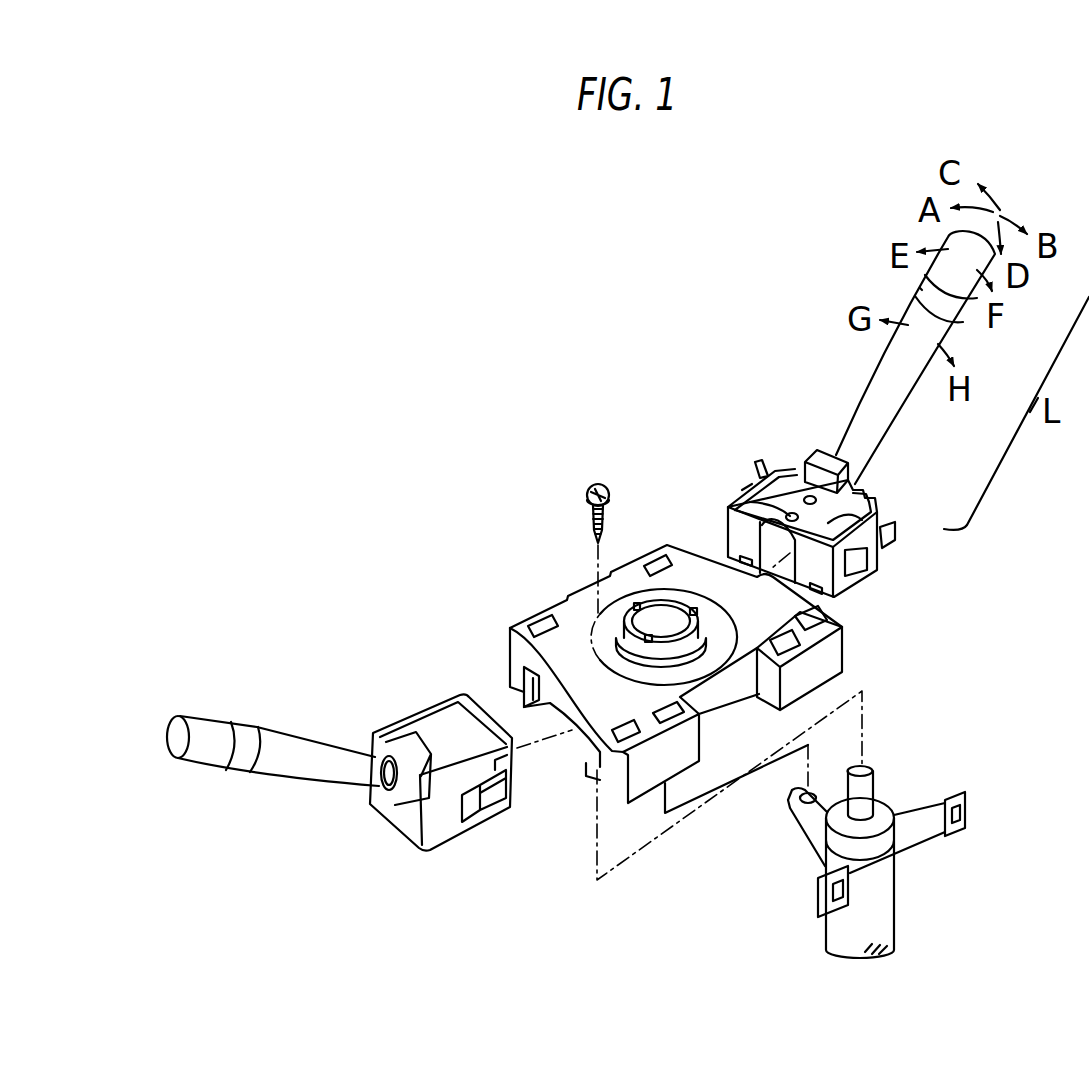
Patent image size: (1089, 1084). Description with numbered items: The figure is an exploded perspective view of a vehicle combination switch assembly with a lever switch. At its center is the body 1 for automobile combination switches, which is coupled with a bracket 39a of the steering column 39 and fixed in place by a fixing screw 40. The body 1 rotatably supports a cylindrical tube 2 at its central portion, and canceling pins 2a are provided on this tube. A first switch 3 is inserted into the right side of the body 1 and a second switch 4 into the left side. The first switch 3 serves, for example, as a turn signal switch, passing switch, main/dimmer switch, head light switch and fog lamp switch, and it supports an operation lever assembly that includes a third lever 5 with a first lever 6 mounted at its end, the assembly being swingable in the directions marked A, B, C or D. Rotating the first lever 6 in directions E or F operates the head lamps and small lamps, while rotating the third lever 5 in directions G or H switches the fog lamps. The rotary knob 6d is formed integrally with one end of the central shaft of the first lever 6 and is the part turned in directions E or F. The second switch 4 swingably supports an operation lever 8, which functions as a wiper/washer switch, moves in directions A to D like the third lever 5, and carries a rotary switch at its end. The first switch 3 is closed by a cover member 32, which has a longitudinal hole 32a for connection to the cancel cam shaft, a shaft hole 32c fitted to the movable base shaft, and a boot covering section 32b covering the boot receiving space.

The body 1 is at (850, 659).
The cylindrical tube 2 is at (629, 592).
The canceling pins 2a is at (692, 610).
The first switch 3 is at (819, 500).
The second switch 4 is at (453, 848).
The third lever 5 is at (943, 337).
The first lever 6 is at (977, 270).
The rotary knob 6d is at (950, 246).
The operation lever 8 is at (293, 735).
The cover member 32 is at (893, 545).
The longitudinal hole 32a is at (742, 490).
The boot covering section 32b is at (826, 460).
The shaft hole 32c is at (806, 495).
The steering column 39 is at (893, 838).
The bracket 39a is at (933, 835).
The fixing screw 40 is at (602, 485).